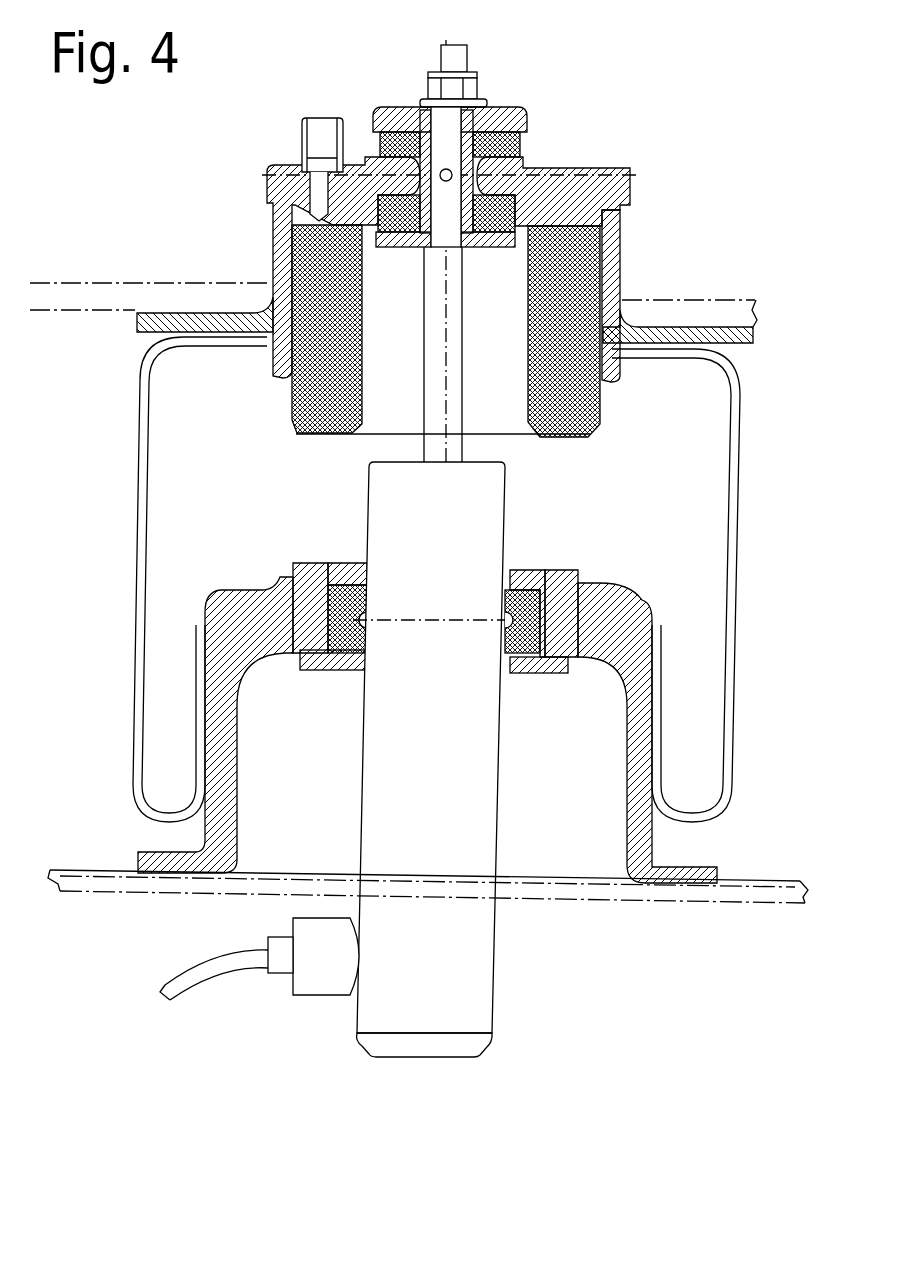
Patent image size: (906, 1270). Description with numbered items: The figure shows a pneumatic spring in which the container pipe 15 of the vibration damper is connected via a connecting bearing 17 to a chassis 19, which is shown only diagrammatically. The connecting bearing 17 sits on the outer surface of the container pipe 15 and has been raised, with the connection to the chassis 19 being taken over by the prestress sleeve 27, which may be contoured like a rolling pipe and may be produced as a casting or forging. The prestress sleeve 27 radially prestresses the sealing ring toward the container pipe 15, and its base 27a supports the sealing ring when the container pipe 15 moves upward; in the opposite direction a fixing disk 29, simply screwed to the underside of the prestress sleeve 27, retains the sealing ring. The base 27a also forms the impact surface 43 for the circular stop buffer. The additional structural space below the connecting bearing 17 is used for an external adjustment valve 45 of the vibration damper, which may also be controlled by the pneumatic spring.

The container pipe 15 is at (467, 998).
The connecting bearing 17 is at (291, 560).
The chassis 19 is at (690, 893).
The prestress sleeve 27 is at (215, 810).
The base of the prestress sleeve 27a is at (528, 564).
The fixing disk 29 is at (325, 670).
The impact surface 43 is at (580, 566).
The external adjustment valve 45 is at (308, 980).